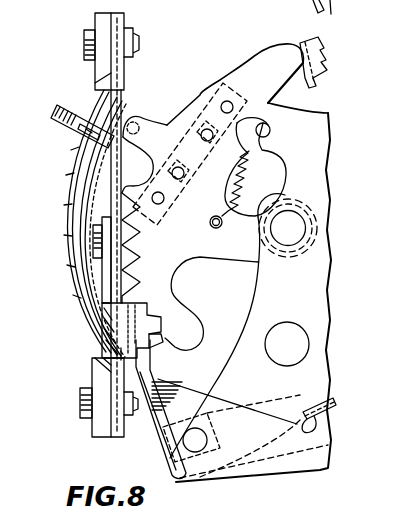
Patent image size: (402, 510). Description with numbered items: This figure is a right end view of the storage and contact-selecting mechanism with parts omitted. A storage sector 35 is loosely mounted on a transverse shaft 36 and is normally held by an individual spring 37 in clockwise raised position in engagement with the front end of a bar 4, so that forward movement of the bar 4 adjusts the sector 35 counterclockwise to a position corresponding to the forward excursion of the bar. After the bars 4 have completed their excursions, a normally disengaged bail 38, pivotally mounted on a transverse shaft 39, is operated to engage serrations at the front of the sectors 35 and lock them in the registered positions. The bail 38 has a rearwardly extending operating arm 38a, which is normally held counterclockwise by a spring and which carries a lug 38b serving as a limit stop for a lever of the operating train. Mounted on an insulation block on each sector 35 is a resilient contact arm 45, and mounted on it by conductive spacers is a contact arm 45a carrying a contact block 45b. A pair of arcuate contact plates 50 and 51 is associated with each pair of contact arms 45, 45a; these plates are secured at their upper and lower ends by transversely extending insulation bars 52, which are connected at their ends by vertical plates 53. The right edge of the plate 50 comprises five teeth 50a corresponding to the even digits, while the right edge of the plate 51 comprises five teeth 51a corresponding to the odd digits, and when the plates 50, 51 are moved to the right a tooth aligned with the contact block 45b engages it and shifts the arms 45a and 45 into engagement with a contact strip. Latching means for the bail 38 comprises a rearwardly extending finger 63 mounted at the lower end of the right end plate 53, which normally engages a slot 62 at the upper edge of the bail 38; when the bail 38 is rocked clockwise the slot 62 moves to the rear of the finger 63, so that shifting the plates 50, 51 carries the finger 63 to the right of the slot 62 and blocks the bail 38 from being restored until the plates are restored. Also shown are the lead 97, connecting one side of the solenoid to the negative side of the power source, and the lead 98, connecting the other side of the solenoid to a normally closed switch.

The bar 4 is at (307, 57).
The sector 35 is at (180, 316).
The transverse shaft 36 is at (293, 233).
The spring 37 is at (244, 192).
The bail 38 is at (150, 367).
The operating arm 38a is at (255, 466).
The lug 38b is at (312, 430).
The transverse shaft 39 is at (202, 433).
The resilient contact arm 45 is at (127, 113).
The contact arm 45a is at (77, 117).
The contact block 45b is at (80, 140).
The arcuate contact plate 50 is at (80, 233).
The teeth 50a is at (82, 271).
The arcuate contact plate 51 is at (75, 161).
The teeth 51a is at (66, 184).
The insulation bar 52 is at (107, 17).
The vertical plate 53 is at (114, 163).
The slot 62 is at (153, 358).
The finger 63 is at (128, 320).
The lead 97 is at (312, 4).
The lead 98 is at (318, 44).